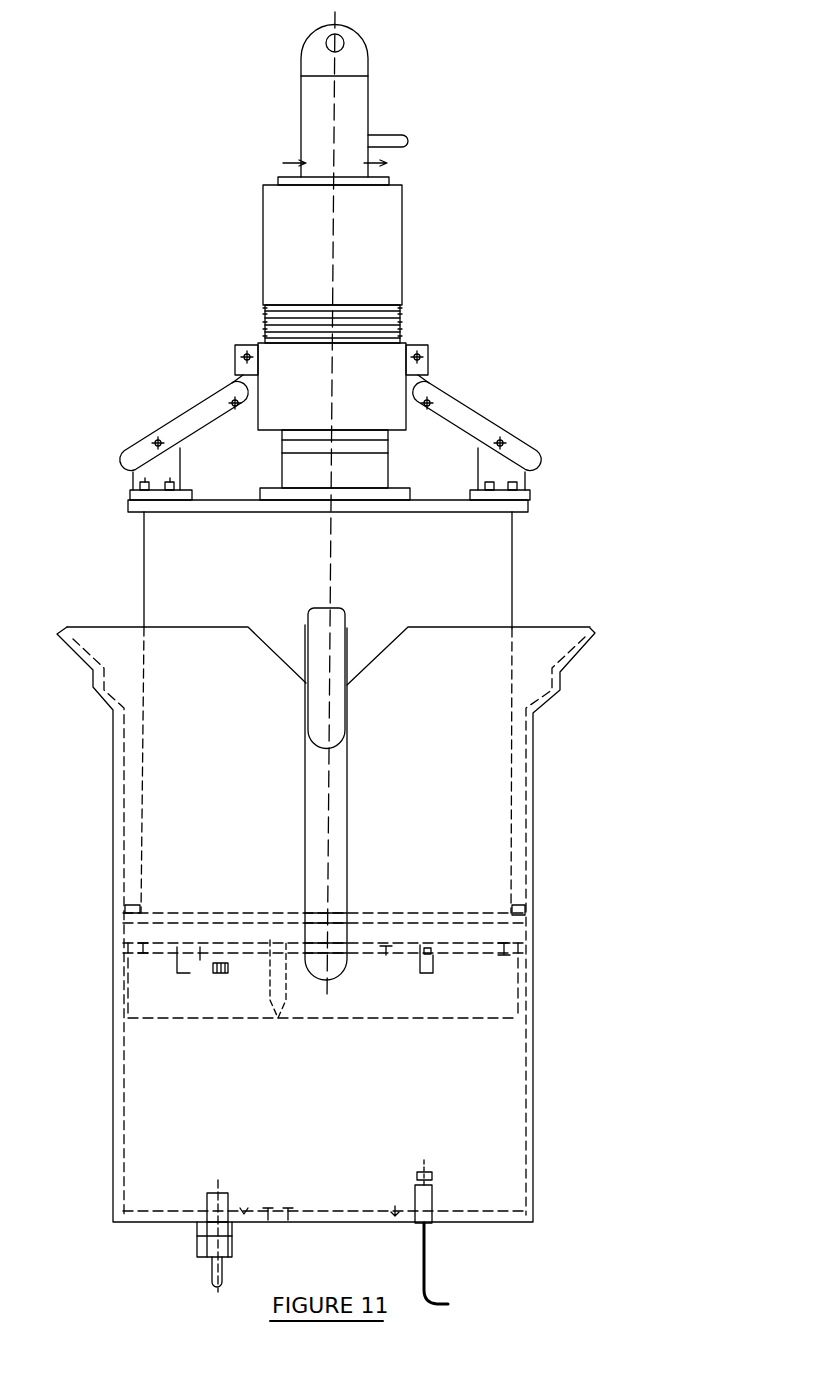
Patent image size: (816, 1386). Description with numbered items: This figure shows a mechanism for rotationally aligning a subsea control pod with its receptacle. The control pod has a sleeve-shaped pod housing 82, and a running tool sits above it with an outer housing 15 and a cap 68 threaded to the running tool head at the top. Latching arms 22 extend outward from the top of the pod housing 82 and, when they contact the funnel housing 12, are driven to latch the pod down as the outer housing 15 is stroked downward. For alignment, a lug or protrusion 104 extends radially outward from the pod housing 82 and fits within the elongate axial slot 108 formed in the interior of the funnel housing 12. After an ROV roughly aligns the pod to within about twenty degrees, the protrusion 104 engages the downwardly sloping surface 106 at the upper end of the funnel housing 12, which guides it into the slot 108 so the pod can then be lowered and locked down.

The funnel housing 12 is at (118, 852).
The running tool outer housing 15 is at (372, 238).
The latching arm 22 is at (197, 422).
The cap 68 is at (353, 62).
The pod housing 82 is at (328, 570).
The protrusion 104 is at (322, 638).
The downwardly sloping surface 106 is at (392, 638).
The elongate axial slot 108 is at (315, 805).